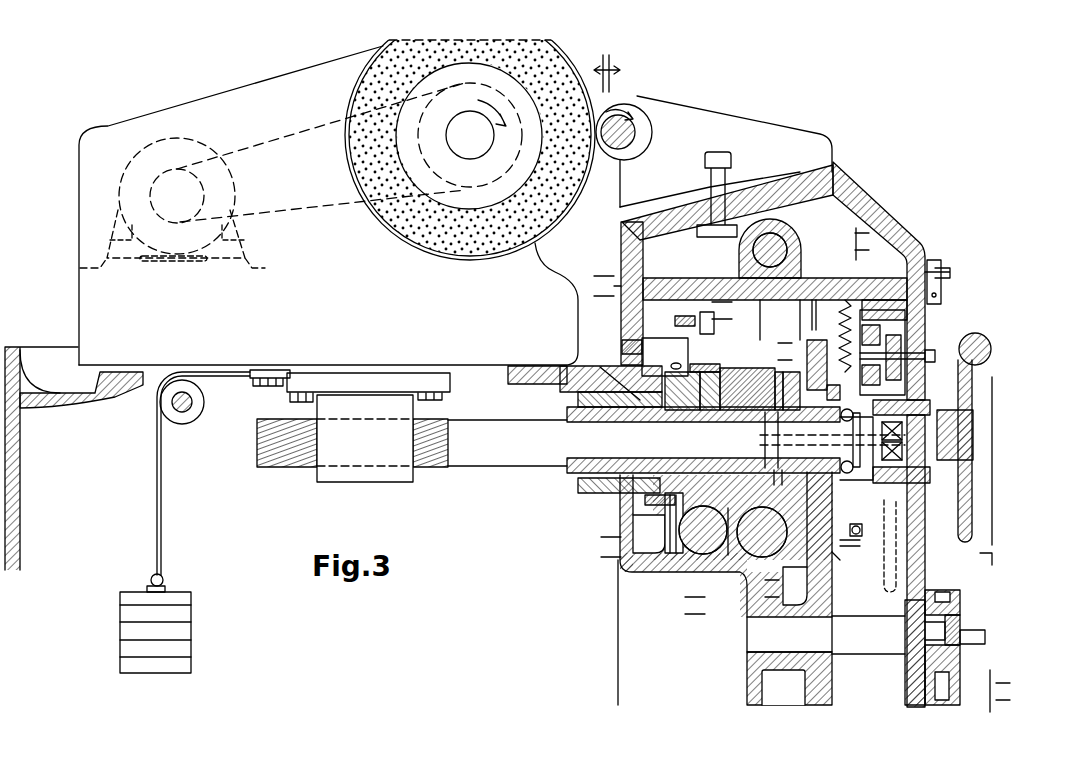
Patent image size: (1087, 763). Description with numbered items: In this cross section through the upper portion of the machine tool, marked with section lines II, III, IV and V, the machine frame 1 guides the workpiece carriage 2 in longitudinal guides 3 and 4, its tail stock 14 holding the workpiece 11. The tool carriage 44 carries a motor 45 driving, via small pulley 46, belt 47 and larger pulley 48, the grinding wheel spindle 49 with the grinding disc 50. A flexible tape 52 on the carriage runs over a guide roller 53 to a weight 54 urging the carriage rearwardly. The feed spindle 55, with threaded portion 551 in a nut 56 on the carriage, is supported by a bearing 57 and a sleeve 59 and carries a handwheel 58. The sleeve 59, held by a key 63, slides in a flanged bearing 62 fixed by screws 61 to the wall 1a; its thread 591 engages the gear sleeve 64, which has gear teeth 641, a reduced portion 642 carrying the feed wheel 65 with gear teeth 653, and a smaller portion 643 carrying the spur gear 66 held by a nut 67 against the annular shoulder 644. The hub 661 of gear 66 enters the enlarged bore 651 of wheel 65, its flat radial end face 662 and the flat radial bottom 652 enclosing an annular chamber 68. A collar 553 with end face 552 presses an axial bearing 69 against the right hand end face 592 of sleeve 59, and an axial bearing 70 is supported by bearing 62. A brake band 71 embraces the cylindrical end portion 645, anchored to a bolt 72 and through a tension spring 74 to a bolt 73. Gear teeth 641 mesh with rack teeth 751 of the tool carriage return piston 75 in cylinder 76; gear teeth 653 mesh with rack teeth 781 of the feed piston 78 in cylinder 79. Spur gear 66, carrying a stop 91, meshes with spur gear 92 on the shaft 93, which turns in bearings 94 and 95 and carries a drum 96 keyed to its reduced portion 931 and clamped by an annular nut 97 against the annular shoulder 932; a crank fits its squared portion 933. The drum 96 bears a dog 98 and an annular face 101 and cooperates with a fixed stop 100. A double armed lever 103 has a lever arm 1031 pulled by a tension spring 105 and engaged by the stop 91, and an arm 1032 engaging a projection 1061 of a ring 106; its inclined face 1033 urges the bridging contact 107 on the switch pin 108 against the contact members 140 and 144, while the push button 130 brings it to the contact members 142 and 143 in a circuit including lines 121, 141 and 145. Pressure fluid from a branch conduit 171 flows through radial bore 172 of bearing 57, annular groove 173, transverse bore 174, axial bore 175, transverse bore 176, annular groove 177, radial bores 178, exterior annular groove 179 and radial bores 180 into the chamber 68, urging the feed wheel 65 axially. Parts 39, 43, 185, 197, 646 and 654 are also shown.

The machine frame 1 is at (905, 695).
The wall 1a is at (630, 565).
The workpiece carriage 2 is at (895, 225).
The longitudinal guide 3 is at (640, 280).
The longitudinal guide 4 is at (884, 279).
The workpiece 11 is at (636, 142).
The tail stock 14 is at (755, 124).
The bearing shaft 39 is at (772, 233).
The bearing housing 43 is at (797, 235).
The tool carriage 44 is at (572, 332).
The motor 45 is at (172, 239).
The small pulley 46 is at (203, 183).
The belt 47 is at (318, 201).
The larger pulley 48 is at (437, 165).
The grinding wheel spindle 49 is at (476, 129).
The grinding disc 50 is at (412, 244).
The flexible tape 52 is at (243, 382).
The guide roller 53 is at (193, 418).
The weight 54 is at (185, 522).
The feed spindle 55 is at (676, 443).
The nut 56 is at (365, 438).
The bearing 57 is at (925, 475).
The handwheel 58 is at (972, 497).
The sleeve 59 is at (585, 406).
The screws 61 is at (640, 505).
The flanged bearing 62 is at (612, 410).
The key 63 is at (619, 496).
The gear sleeve 64 is at (728, 418).
The feed wheel 65 is at (747, 389).
The spur gear 66 is at (812, 340).
The nut 67 is at (870, 522).
The annular chamber 68 is at (790, 560).
The axial bearing 69 is at (852, 472).
The axial bearing 70 is at (609, 373).
The brake band 71 is at (682, 366).
The bolt 72 is at (665, 357).
The bolt 73 is at (724, 326).
The tension spring 74 is at (693, 333).
The tool carriage return piston 75 is at (690, 560).
The cylinder 76 is at (679, 533).
The feed piston 78 is at (795, 617).
The cylinder 79 is at (750, 600).
The stop 91 is at (858, 543).
The spur gear 92 is at (820, 583).
The shaft 93 is at (868, 635).
The bearing 94 is at (748, 638).
The bearing 95 is at (905, 610).
The drum 96 is at (925, 665).
The annular nut 97 is at (958, 612).
The dog 98 is at (950, 588).
The stop 100 is at (950, 683).
The annular face 101 is at (940, 585).
The double armed lever 103 is at (915, 408).
The tension spring 105 is at (838, 336).
The ring 106 is at (885, 318).
The bridging contact 107 is at (895, 345).
The switch pin 108 is at (900, 358).
The line 121 is at (895, 350).
The push button 130 is at (935, 358).
The contact member 140 is at (903, 365).
The line 141 is at (900, 375).
The contact member 142 is at (890, 385).
The contact member 143 is at (900, 338).
The contact member 144 is at (893, 352).
The line 145 is at (905, 330).
The branch conduit 171 is at (895, 563).
The radial bore 172 is at (942, 512).
The annular groove 173 is at (908, 453).
The transverse bore 174 is at (908, 432).
The axial bore 175 is at (942, 532).
The transverse bore 176 is at (795, 440).
The annular groove 177 is at (809, 453).
The radial bores 178 is at (838, 430).
The exterior annular groove 179 is at (772, 478).
The radial bores 180 is at (760, 467).
The bracket 185 is at (941, 283).
The clutch part 197 is at (898, 345).
The threaded portion 551 is at (283, 470).
The end face 552 is at (854, 404).
The collar 553 is at (917, 530).
The thread 591 is at (685, 422).
The right hand end face 592 is at (858, 470).
The exterior gear teeth 641 is at (722, 362).
The reduced cylindrical portion 642 is at (740, 422).
The reduced cylindrical portion 643 is at (840, 453).
The annular shoulder 644 is at (844, 560).
The cylindrical end portion 645 is at (612, 345).
The shaft 646 is at (730, 572).
The enlarged bore 651 is at (770, 340).
The flat radial bottom 652 is at (768, 410).
The gear teeth 653 is at (752, 358).
The gear part 654 is at (722, 560).
The hub 661 is at (796, 365).
The flat radial end face 662 is at (796, 340).
The rack teeth 751 is at (680, 565).
The rack teeth 781 is at (775, 510).
The reduced cylindrical portion 931 is at (925, 640).
The annular shoulder 932 is at (925, 628).
The squared portion 933 is at (985, 638).
The lever arm 1031 is at (783, 320).
The lever arm 1032 is at (855, 300).
The inclined face 1033 is at (870, 345).
The projection 1061 is at (900, 395).
The section line II is at (778, 469).
The section line III is at (607, 416).
The section line IV is at (708, 457).
The section line V is at (932, 470).